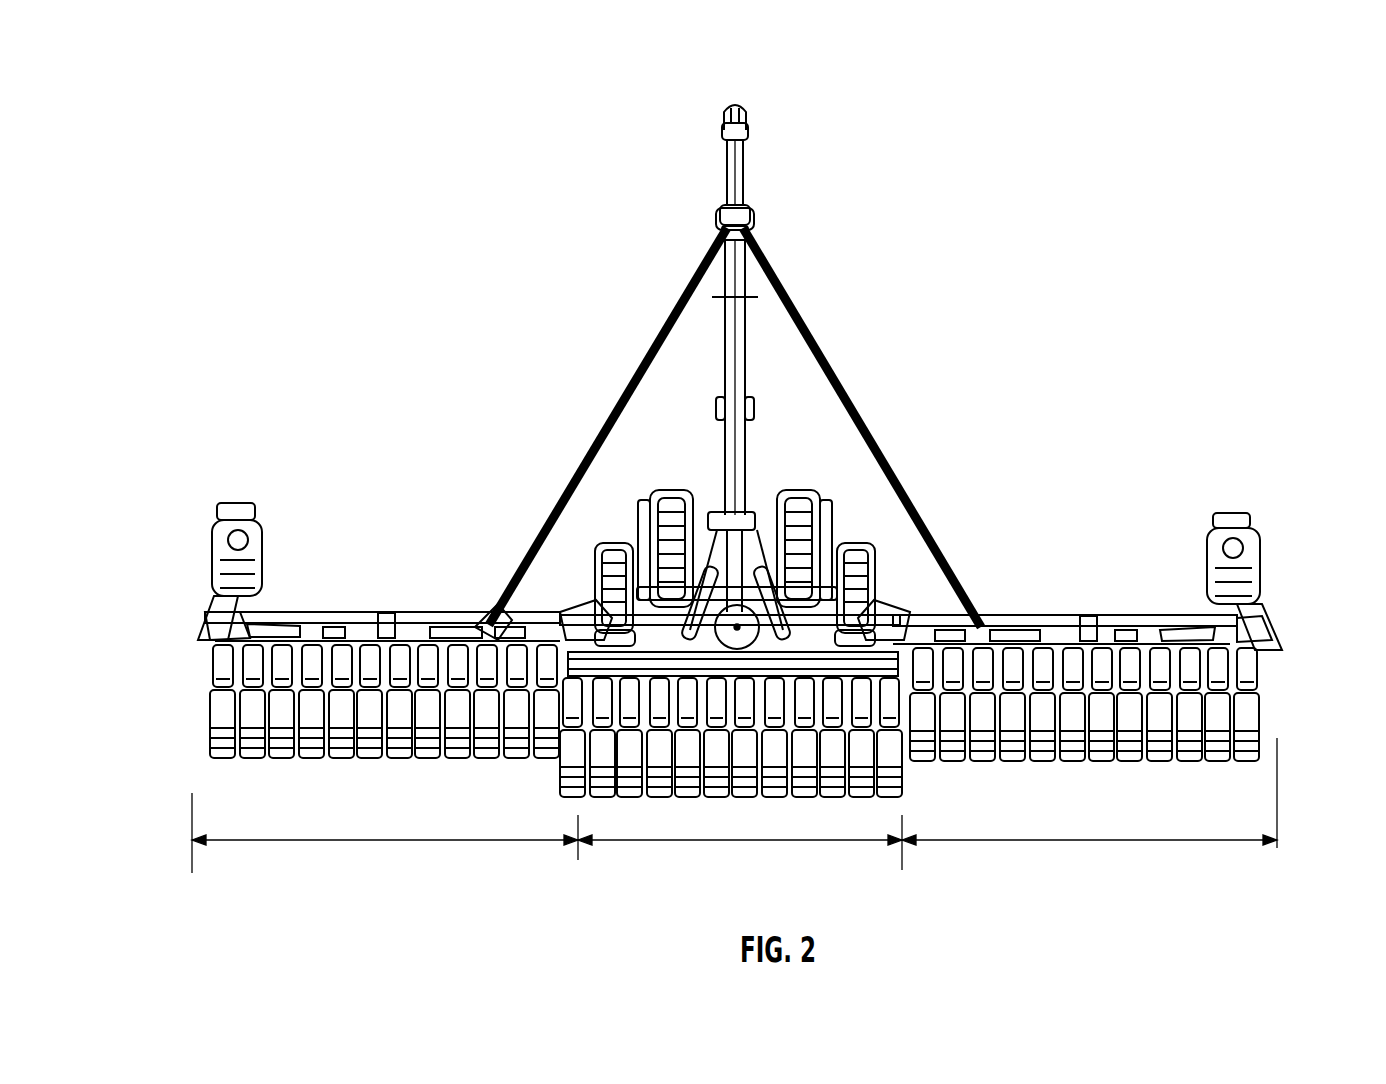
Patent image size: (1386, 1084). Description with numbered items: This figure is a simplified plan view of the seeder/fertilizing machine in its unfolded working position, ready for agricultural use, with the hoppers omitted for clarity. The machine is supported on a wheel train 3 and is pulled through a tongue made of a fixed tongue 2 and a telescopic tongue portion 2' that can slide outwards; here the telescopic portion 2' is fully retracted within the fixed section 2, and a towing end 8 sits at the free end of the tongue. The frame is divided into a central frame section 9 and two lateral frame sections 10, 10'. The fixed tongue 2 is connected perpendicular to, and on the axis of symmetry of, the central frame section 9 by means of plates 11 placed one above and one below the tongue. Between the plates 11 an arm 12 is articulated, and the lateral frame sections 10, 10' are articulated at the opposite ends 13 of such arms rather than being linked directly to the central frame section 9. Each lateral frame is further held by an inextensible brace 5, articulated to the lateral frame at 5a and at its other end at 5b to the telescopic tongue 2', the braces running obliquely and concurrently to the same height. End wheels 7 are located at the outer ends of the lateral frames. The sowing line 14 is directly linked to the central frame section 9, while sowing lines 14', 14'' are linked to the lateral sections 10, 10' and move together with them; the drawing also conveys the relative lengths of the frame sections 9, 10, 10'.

The fixed tongue 2 is at (791, 370).
The telescopic tongue portion 2' is at (807, 172).
The wheel train 3 is at (775, 389).
The brace 5 is at (648, 349).
The brace articulation 5a is at (486, 604).
The brace joint 5b is at (717, 222).
The end wheel 7 is at (231, 502).
The towing end 8 is at (745, 103).
The central frame section 9 is at (815, 607).
The lateral frame section 10 is at (382, 652).
The lateral frame section 10' is at (1087, 652).
The plates 11 is at (800, 490).
The arm 12 is at (466, 449).
The arm end articulation 13 is at (908, 612).
The sowing line 14 is at (796, 754).
The sowing line 14' is at (161, 701).
The sowing line 14'' is at (1308, 704).